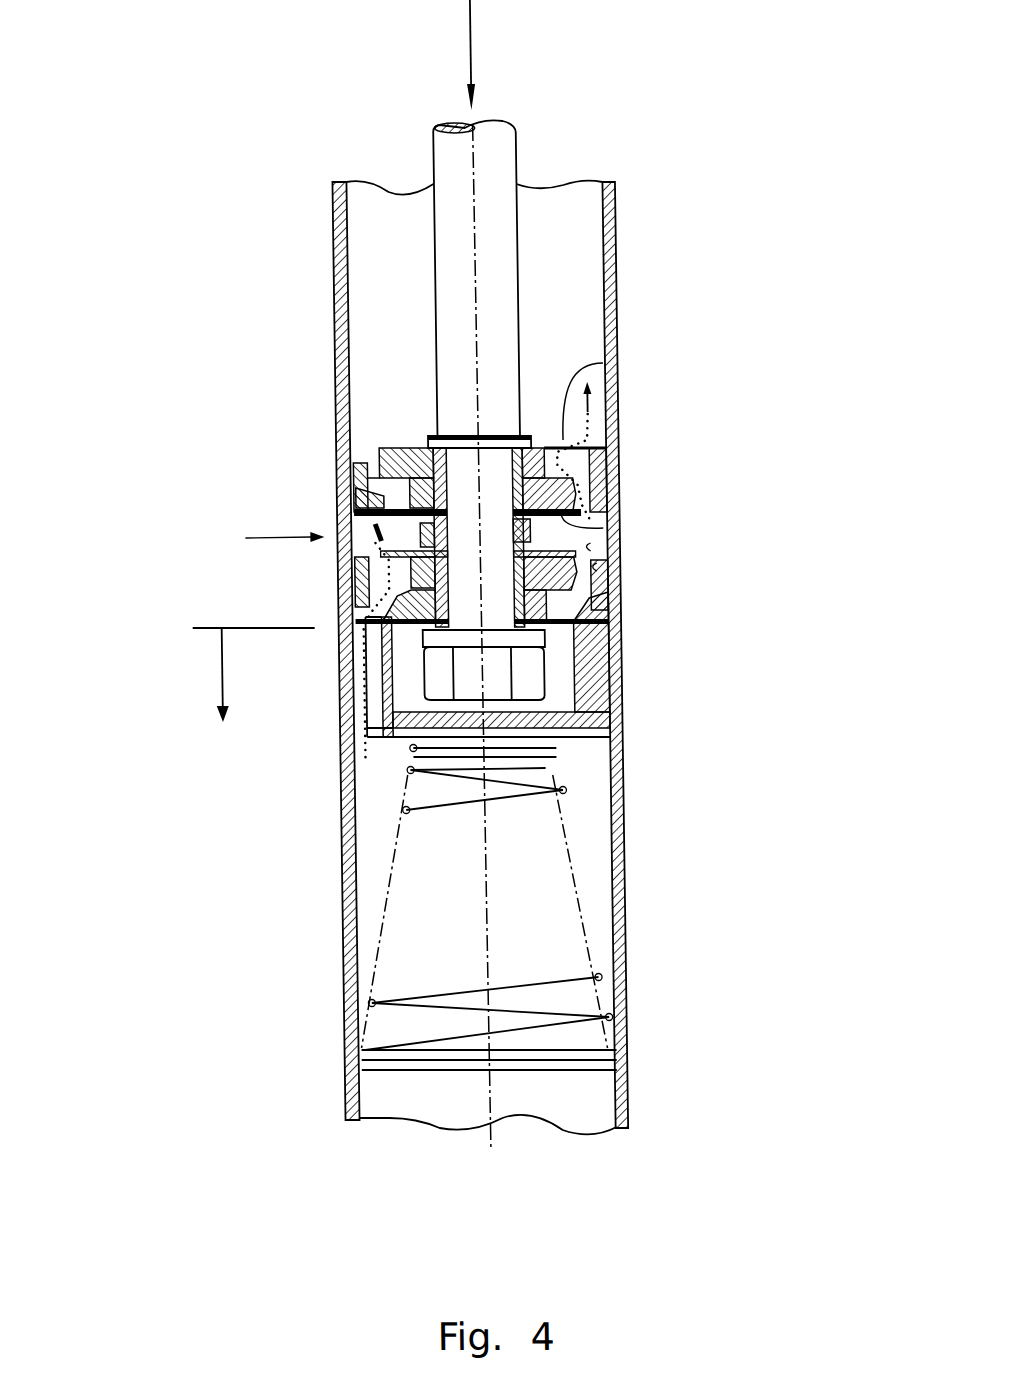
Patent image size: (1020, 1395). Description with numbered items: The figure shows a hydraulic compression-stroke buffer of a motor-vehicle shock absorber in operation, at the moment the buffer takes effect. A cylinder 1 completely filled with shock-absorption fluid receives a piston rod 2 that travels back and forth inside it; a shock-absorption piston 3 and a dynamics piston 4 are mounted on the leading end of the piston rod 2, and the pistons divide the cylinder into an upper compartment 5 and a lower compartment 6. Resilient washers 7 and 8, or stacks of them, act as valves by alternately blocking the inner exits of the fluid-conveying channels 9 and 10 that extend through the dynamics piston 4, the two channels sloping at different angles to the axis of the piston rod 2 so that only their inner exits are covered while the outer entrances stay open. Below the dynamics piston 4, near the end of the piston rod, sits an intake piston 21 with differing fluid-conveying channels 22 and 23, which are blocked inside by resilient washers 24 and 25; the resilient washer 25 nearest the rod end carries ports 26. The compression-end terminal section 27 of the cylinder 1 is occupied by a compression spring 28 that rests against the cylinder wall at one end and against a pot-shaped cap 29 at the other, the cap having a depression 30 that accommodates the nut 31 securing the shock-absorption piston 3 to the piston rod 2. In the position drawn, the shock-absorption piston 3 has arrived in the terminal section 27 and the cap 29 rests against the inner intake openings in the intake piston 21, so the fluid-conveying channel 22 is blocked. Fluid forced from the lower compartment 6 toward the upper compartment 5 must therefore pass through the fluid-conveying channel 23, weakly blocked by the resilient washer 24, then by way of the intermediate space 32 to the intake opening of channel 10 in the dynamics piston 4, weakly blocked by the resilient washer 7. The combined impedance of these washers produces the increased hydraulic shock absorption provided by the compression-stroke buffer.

The cylinder 1 is at (618, 325).
The piston rod 2 is at (503, 297).
The shock-absorption piston 3 is at (266, 538).
The dynamics piston 4 is at (354, 500).
The upper compartment 5 is at (474, 212).
The lower compartment 6 is at (482, 892).
The resilient washer 7 is at (607, 362).
The resilient washer 8 is at (616, 518).
The fluid-conveying channel 9 is at (381, 473).
The fluid-conveying channel 10 is at (616, 462).
The intake piston 21 is at (603, 568).
The fluid-conveying channel 22 is at (606, 610).
The fluid-conveying channel 23 is at (348, 578).
The resilient washer 24 is at (401, 547).
The resilient washer 25 is at (429, 617).
The ports 26 is at (612, 680).
The terminal section 27 is at (255, 703).
The compression spring 28 is at (594, 977).
The pot-shaped cap 29 is at (604, 724).
The depression 30 is at (550, 623).
The nut 31 is at (440, 684).
The intermediate space 32 is at (620, 548).